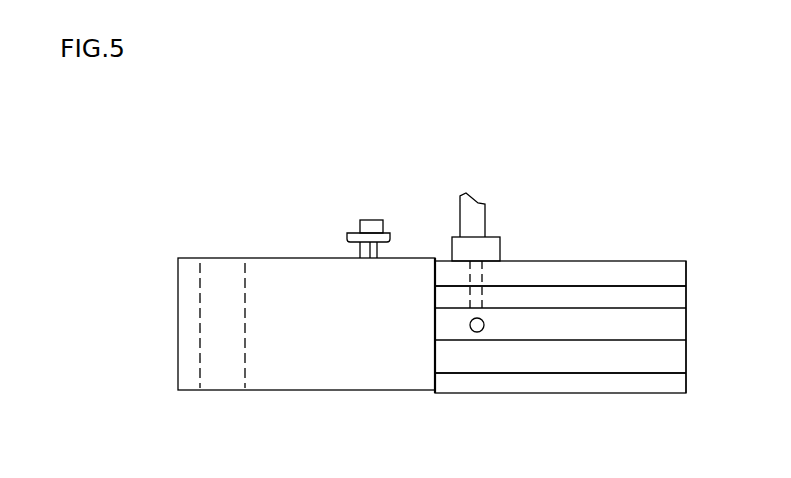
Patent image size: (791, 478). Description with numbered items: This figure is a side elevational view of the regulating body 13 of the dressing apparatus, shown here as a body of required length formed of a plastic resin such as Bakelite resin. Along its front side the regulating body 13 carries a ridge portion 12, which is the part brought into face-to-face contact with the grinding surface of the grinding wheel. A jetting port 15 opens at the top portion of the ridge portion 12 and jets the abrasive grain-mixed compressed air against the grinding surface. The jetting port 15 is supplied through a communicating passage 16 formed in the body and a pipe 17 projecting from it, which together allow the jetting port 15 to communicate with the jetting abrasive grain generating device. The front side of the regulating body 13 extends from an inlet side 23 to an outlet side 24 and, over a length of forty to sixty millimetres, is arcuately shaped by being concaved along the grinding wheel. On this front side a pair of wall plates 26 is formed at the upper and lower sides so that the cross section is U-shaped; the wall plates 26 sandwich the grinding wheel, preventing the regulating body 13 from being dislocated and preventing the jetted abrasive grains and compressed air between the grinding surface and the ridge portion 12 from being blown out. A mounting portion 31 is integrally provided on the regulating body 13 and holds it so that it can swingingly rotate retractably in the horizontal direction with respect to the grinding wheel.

The ridge portion 12 is at (620, 327).
The regulating body 13 is at (683, 259).
The jetting port 15 is at (477, 333).
The communicating passage 16 is at (470, 293).
The pipe 17 is at (467, 209).
The inlet side 23 is at (435, 330).
The outlet side 24 is at (686, 333).
The wall plates 26 is at (539, 270).
The mounting portion 31 is at (287, 392).